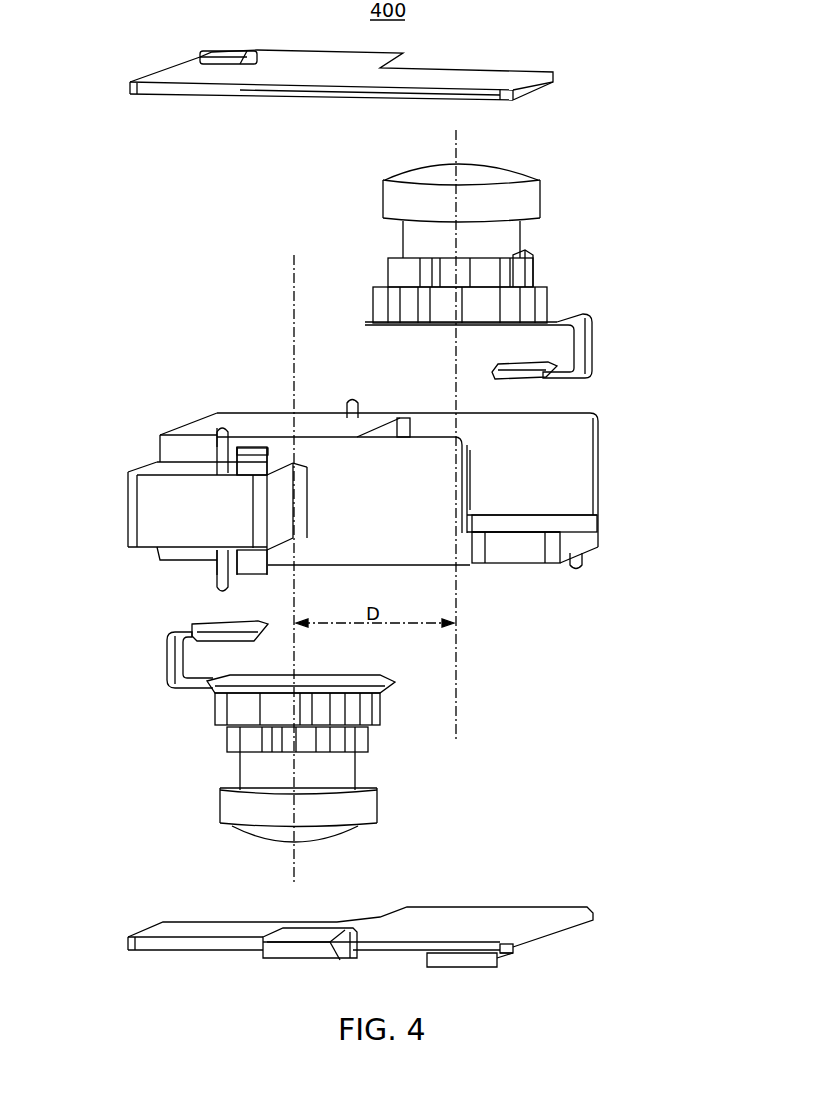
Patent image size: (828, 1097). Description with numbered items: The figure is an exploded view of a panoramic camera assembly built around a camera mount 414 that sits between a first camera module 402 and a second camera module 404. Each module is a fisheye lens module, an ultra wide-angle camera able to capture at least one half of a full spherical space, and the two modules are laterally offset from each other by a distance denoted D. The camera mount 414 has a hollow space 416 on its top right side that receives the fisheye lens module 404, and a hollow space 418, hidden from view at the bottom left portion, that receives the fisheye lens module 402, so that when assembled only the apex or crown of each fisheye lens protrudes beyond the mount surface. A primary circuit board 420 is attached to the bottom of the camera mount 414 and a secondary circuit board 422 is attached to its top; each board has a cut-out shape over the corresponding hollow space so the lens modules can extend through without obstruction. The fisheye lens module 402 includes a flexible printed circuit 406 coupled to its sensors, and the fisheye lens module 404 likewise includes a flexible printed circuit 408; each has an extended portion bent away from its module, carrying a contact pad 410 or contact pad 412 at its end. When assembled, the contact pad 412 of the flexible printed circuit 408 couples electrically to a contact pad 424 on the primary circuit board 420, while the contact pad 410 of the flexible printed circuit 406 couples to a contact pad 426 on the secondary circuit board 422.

The first camera module 402 is at (225, 728).
The second camera module 404 is at (532, 255).
The flexible printed circuit 406 is at (168, 660).
The flexible printed circuit 408 is at (577, 345).
The contact pad 410 is at (213, 630).
The contact pad 412 is at (540, 380).
The camera mount 414 is at (213, 415).
The hollow space 416 is at (473, 480).
The hollow space 418 is at (270, 553).
The primary circuit board 420 is at (520, 922).
The secondary circuit board 422 is at (200, 72).
The contact pad 424 is at (497, 958).
The contact pad 426 is at (205, 53).